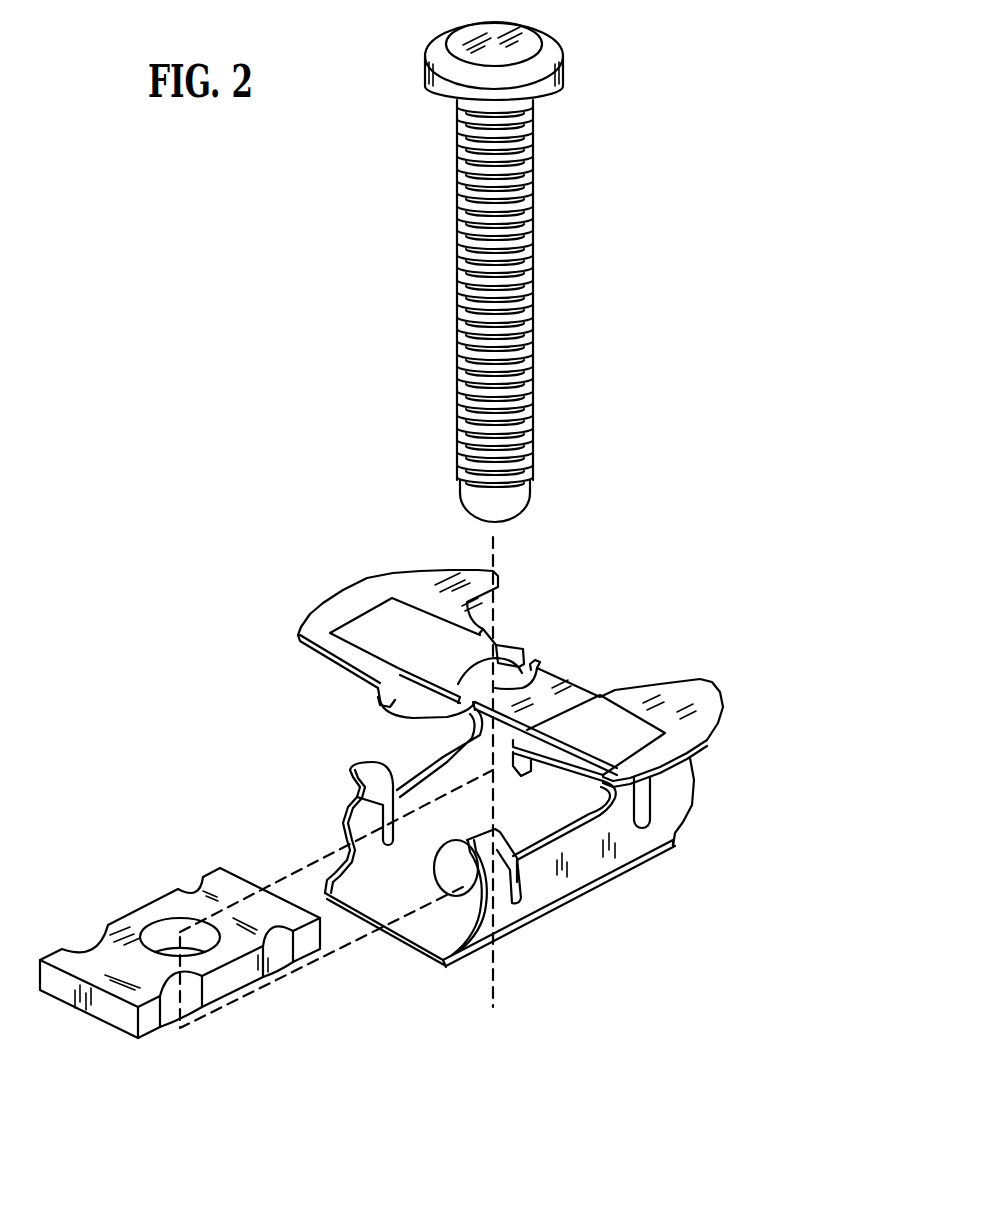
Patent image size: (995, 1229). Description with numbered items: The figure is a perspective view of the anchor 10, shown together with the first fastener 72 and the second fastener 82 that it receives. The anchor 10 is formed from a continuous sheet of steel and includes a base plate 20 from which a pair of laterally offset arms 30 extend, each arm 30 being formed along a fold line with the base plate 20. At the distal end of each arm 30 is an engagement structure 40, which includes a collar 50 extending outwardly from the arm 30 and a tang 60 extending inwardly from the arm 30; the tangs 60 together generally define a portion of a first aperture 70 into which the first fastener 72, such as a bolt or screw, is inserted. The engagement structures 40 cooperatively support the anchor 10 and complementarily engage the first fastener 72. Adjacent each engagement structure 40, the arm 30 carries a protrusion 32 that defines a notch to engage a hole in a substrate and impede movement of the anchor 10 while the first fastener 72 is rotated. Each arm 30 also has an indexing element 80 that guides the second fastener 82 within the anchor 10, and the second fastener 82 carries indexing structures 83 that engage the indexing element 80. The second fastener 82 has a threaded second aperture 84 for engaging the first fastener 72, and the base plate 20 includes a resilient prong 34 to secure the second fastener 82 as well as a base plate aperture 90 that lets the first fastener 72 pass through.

The anchor 10 is at (703, 582).
The base plate 20 is at (432, 930).
The arm 30 is at (430, 702).
The protrusion 32 is at (377, 699).
The resilient prong 34 is at (363, 773).
The engagement structure 40 is at (552, 654).
The collar 50 is at (427, 588).
The tang 60 is at (522, 650).
The first aperture 70 is at (477, 685).
The first fastener 72 is at (532, 254).
The indexing element 80 is at (640, 806).
The second fastener 82 is at (188, 947).
The indexing structure 83 is at (193, 885).
The second aperture 84 is at (173, 930).
The base plate aperture 90 is at (448, 872).